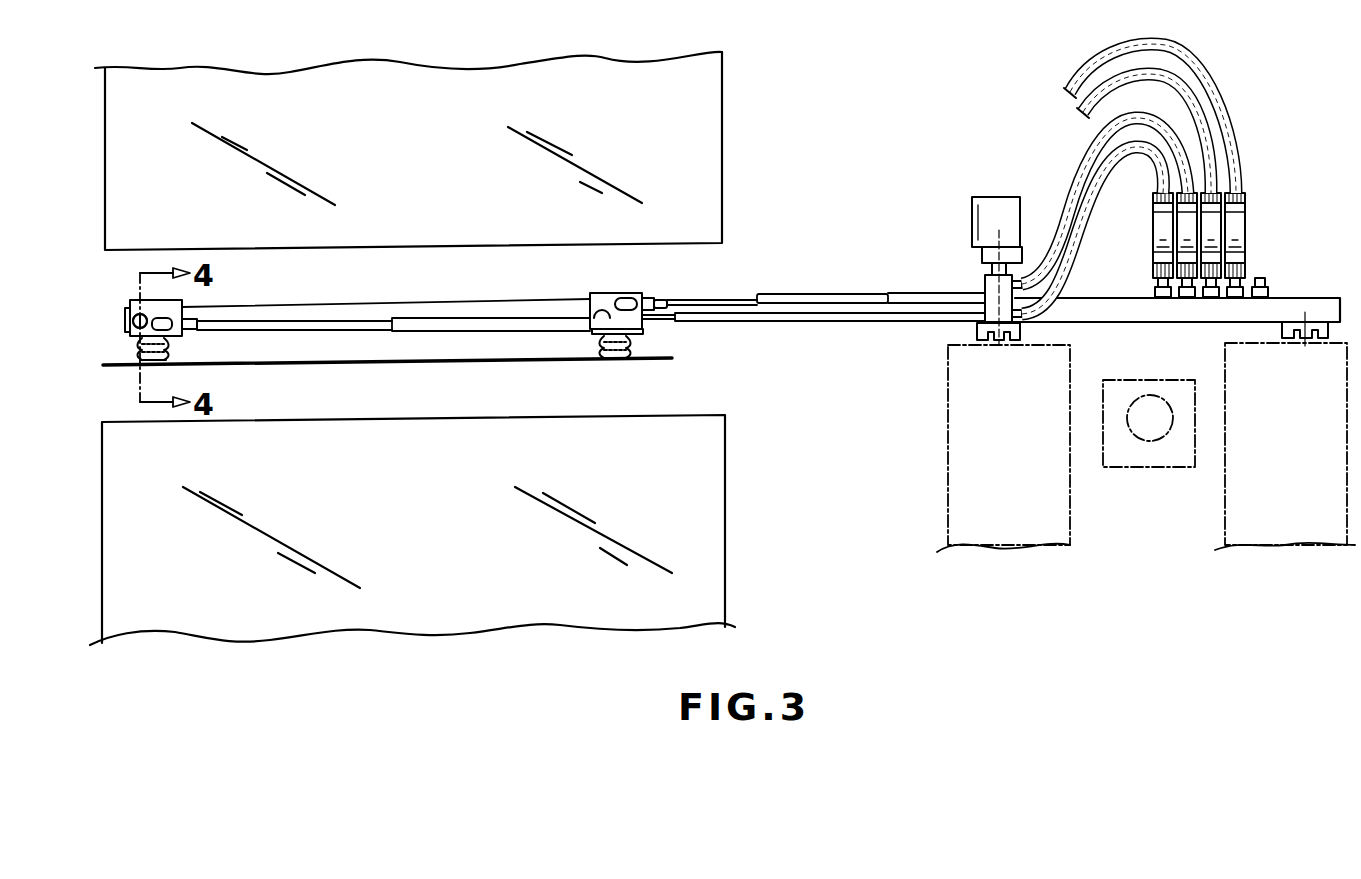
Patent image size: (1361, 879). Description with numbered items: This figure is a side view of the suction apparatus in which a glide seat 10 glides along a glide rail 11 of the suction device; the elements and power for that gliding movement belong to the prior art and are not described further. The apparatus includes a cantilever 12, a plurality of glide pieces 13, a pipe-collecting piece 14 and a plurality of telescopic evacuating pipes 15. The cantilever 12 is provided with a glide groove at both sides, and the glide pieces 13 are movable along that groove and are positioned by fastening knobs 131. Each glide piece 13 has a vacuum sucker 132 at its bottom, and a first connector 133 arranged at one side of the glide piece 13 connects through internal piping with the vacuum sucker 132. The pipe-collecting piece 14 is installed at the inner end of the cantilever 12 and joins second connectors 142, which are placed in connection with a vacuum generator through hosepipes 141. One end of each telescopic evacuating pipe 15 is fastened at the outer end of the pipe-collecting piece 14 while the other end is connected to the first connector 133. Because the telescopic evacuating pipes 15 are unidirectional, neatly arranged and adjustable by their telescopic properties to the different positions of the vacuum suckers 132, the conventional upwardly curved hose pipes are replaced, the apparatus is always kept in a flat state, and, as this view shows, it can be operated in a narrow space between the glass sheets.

The glide seat 10 is at (1130, 314).
The glide rail 11 is at (1298, 338).
The cantilever 12 is at (478, 315).
The glide piece 13 is at (168, 311).
The fastening knob 131 is at (127, 322).
The vacuum sucker 132 is at (172, 360).
The first connector 133 is at (645, 303).
The pipe-collecting piece 14 is at (992, 290).
The hosepipe 141 is at (1208, 80).
The second connector 142 is at (1236, 226).
The telescopic evacuating pipe 15 is at (830, 300).